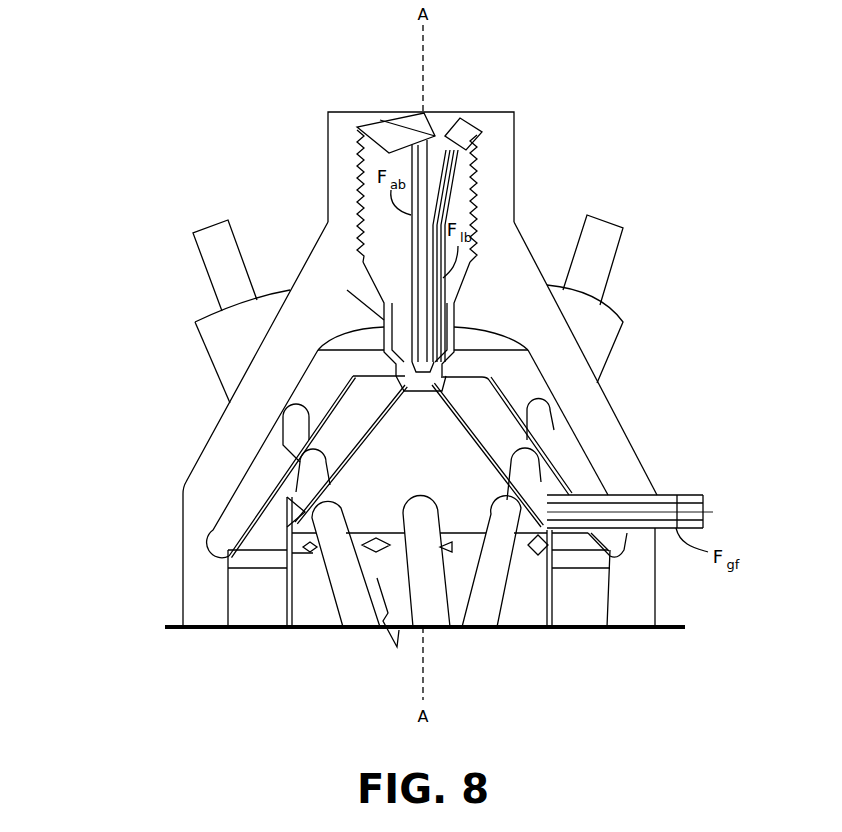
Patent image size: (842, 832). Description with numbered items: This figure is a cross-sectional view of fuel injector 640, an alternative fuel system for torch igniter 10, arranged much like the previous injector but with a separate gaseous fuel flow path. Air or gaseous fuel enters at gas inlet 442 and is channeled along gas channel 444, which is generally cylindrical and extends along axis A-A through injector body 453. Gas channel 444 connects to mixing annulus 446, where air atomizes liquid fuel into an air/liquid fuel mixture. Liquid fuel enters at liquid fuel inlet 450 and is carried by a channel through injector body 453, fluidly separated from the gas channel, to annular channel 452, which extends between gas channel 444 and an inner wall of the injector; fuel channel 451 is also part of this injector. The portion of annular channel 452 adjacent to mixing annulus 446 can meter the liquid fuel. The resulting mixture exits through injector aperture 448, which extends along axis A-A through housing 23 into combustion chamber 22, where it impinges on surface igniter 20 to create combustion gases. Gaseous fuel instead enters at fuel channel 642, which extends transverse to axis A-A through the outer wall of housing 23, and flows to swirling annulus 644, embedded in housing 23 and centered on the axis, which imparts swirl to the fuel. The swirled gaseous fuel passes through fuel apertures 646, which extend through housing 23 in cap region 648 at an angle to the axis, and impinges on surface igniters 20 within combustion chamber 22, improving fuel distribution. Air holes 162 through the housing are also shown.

The torch igniter 10 is at (130, 522).
The surface igniter 20 is at (208, 225).
The combustion chamber 22 is at (519, 622).
The housing 23 is at (658, 583).
The air holes 162 is at (375, 578).
The gas inlet 442 is at (405, 112).
The gas channel 444 is at (363, 262).
The mixing annulus 446 is at (353, 375).
The injector aperture 448 is at (398, 396).
The liquid fuel inlet 450 is at (468, 112).
The fuel channel 451 is at (452, 178).
The annular channel 452 is at (347, 290).
The injector body 453 is at (387, 213).
The fuel injector 640 is at (545, 206).
The fuel channel 642 is at (672, 495).
The swirling annulus 644 is at (551, 496).
The fuel apertures 646 is at (480, 522).
The cap region 648 is at (550, 362).